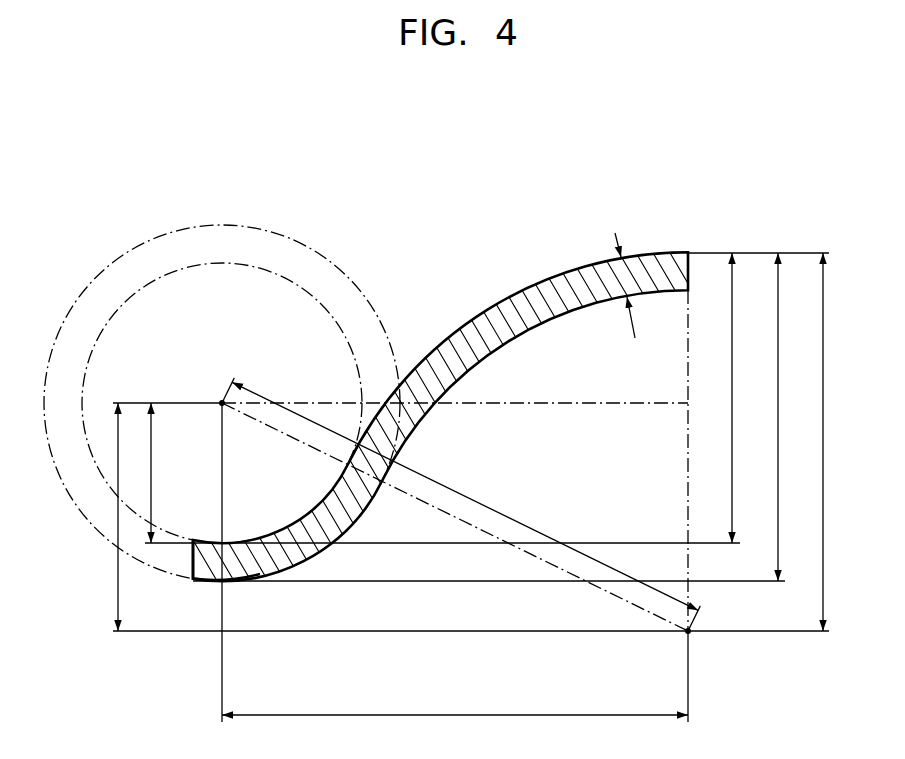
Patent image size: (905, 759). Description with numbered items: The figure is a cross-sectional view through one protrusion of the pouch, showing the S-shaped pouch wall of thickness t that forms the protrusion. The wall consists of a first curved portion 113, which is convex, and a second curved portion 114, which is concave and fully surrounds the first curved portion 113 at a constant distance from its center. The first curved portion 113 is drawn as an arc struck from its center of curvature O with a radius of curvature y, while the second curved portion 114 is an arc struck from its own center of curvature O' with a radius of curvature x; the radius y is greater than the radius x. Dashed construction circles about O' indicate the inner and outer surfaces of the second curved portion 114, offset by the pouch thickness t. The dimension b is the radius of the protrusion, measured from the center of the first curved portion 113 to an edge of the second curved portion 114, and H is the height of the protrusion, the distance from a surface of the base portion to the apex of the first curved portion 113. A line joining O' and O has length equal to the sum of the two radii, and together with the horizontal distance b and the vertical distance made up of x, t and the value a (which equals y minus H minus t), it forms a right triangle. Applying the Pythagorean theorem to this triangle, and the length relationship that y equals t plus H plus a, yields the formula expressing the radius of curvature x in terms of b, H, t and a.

The first curved portion 113 is at (552, 275).
The second curved portion 114 is at (275, 580).
The center of curvature of the first curved portion O is at (699, 643).
The center of curvature of the second curved portion O' is at (208, 389).
The thickness of the pouch t is at (631, 285).
The radius of curvature of the second curved portion x is at (139, 473).
The radius of curvature of the first curved portion y is at (808, 442).
The height of the protrusion H is at (718, 398).
The radius of the protrusion b is at (455, 701).